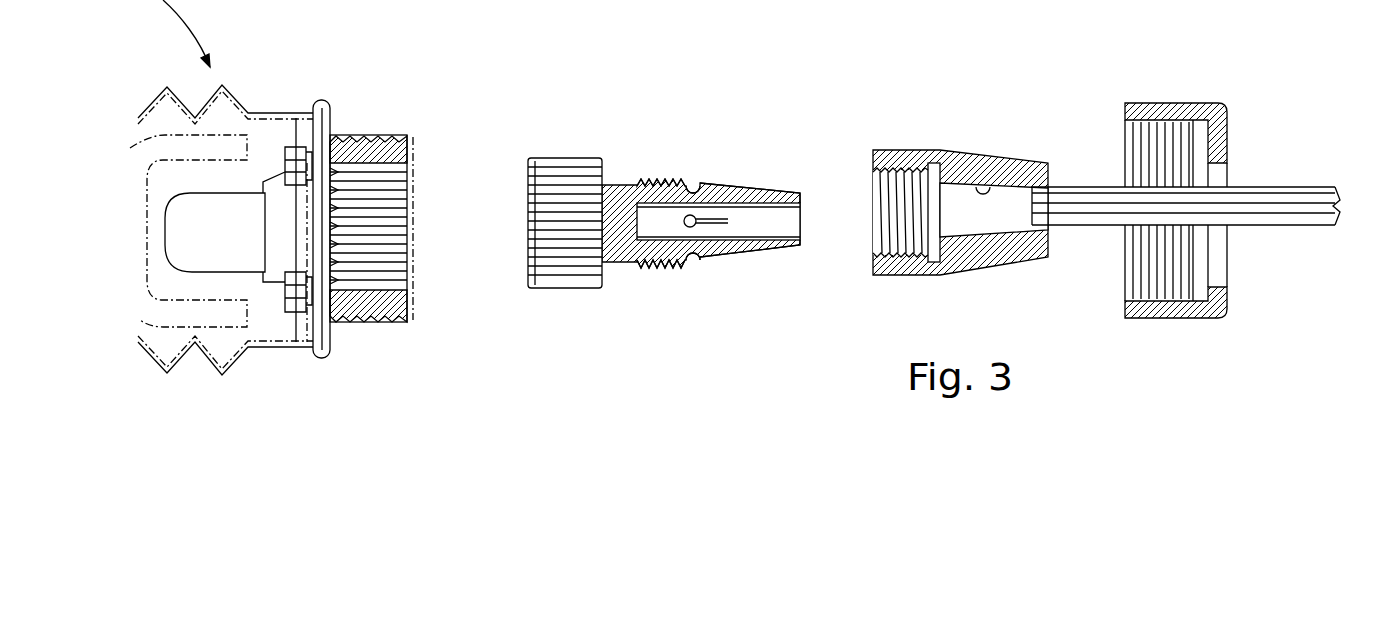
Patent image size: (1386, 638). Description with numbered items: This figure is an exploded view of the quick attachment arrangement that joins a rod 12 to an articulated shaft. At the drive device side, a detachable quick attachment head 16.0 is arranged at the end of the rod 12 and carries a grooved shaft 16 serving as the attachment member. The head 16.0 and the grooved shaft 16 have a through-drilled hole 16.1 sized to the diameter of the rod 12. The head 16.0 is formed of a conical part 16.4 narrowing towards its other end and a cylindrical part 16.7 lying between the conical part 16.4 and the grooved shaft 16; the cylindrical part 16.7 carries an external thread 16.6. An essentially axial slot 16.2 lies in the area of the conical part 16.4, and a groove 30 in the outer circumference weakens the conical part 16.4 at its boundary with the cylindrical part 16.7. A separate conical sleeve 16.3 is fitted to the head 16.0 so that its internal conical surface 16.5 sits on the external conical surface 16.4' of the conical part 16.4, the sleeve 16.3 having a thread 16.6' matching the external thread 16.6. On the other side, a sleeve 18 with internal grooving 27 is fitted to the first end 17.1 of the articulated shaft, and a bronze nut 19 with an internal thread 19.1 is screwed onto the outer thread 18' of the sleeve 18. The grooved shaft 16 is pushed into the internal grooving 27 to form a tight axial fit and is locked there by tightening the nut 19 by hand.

The rod 12 is at (1267, 204).
The grooved shaft 16 is at (567, 158).
The quick attachment head 16.0 is at (686, 209).
The through-drilled hole 16.1 is at (718, 200).
The axial slot 16.2 is at (728, 224).
The conical sleeve 16.3 is at (943, 155).
The conical part 16.4 is at (755, 145).
The external conical surface 16.4' is at (795, 297).
The internal conical surface 16.5 is at (990, 186).
The external thread 16.6 is at (647, 128).
The thread of conical sleeve 16.6' is at (883, 159).
The cylindrical part 16.7 is at (642, 252).
The first end of articulated shaft 17.1 is at (280, 364).
The sleeve 18 is at (396, 185).
The outer thread of sleeve 18' is at (405, 187).
The bronze nut 19 is at (1146, 159).
The internal thread 19.1 is at (1125, 125).
The internal grooving 27 is at (402, 257).
The groove 30 is at (692, 188).